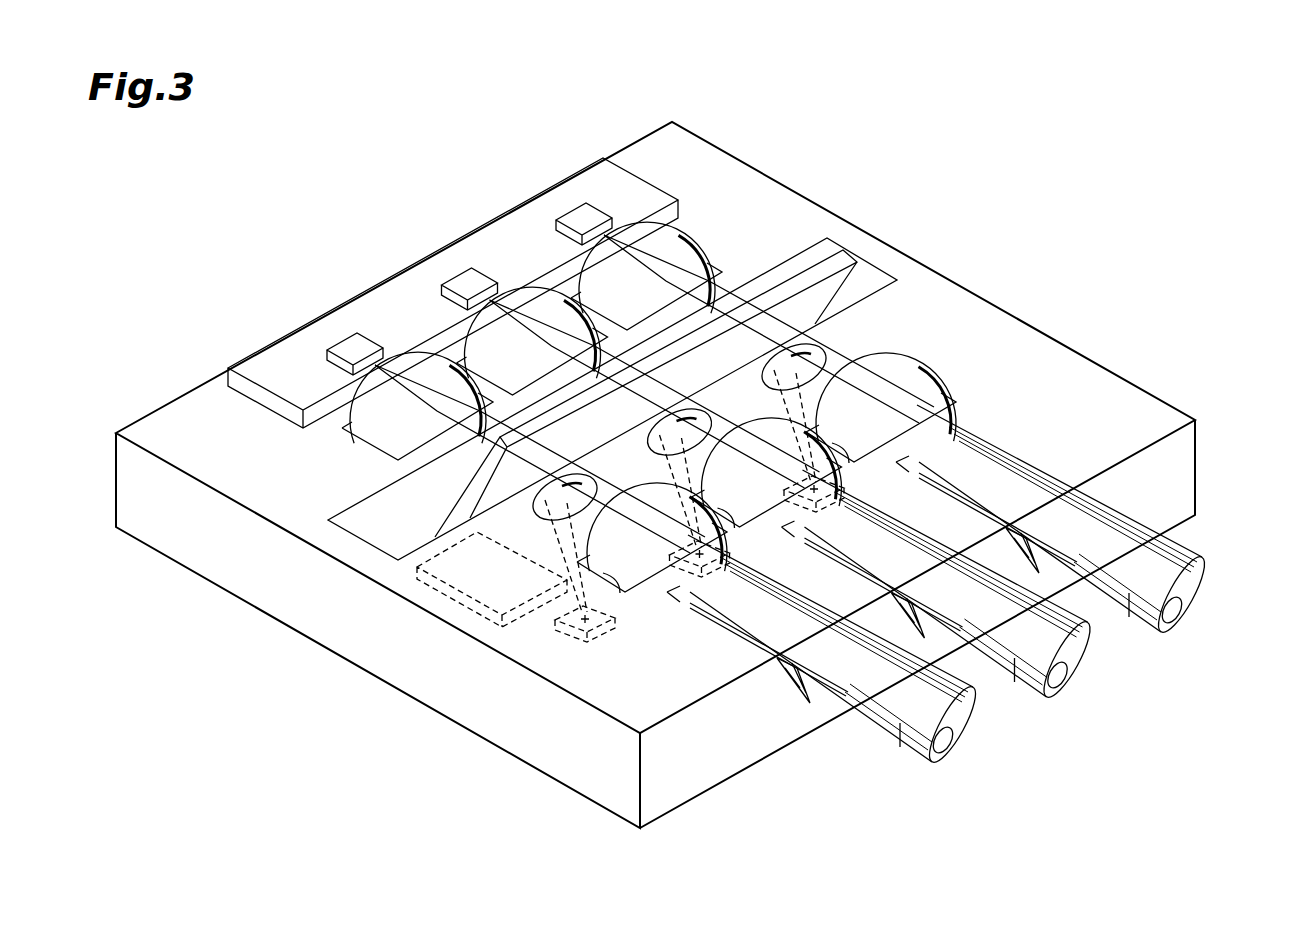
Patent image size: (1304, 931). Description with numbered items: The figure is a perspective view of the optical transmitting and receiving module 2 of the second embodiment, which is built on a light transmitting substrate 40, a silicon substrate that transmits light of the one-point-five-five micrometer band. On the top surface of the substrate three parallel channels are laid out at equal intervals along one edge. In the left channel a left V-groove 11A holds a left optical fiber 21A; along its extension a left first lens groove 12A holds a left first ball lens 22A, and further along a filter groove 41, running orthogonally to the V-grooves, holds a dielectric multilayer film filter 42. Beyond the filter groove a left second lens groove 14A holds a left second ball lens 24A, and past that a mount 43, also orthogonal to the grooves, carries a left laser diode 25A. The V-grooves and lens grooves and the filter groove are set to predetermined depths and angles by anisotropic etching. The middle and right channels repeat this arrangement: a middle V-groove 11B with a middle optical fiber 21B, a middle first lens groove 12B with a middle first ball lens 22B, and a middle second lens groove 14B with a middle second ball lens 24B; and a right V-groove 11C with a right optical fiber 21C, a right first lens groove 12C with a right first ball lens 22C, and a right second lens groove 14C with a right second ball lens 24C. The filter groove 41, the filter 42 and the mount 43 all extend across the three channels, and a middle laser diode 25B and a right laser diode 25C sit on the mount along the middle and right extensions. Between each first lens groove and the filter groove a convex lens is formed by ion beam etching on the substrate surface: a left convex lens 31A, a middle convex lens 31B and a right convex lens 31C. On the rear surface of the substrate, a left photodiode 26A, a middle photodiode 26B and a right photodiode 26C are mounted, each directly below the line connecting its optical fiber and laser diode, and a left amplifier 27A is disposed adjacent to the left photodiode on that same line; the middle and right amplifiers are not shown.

The optical transmitting and receiving module 2 is at (996, 281).
The light transmitting substrate 40 is at (722, 745).
The filter groove 41 is at (378, 543).
The dielectric multilayer film filter 42 is at (477, 487).
The mount 43 is at (275, 363).
The left laser diode 25A is at (345, 350).
The middle laser diode 25B is at (463, 283).
The right laser diode 25C is at (582, 225).
The left second lens groove 14A is at (405, 448).
The middle second lens groove 14B is at (455, 345).
The right second lens groove 14C is at (713, 267).
The left second ball lens 24A is at (357, 417).
The middle second ball lens 24B is at (545, 305).
The right second ball lens 24C is at (660, 243).
The left convex lens 31A is at (543, 500).
The middle convex lens 31B is at (655, 442).
The right convex lens 31C is at (813, 350).
The left photodiode 26A is at (565, 632).
The middle photodiode 26B is at (717, 567).
The right photodiode 26C is at (850, 523).
The left amplifier 27A is at (458, 598).
The left first ball lens 22A is at (653, 560).
The middle first ball lens 22B is at (760, 437).
The right first ball lens 22C is at (912, 380).
The left first lens groove 12A is at (630, 590).
The middle first lens groove 12B is at (753, 540).
The right first lens groove 12C is at (913, 473).
The left V-groove 11A is at (820, 703).
The middle V-groove 11B is at (983, 650).
The right V-groove 11C is at (1087, 583).
The left optical fiber 21A is at (900, 723).
The middle optical fiber 21B is at (1057, 657).
The right optical fiber 21C is at (1177, 587).